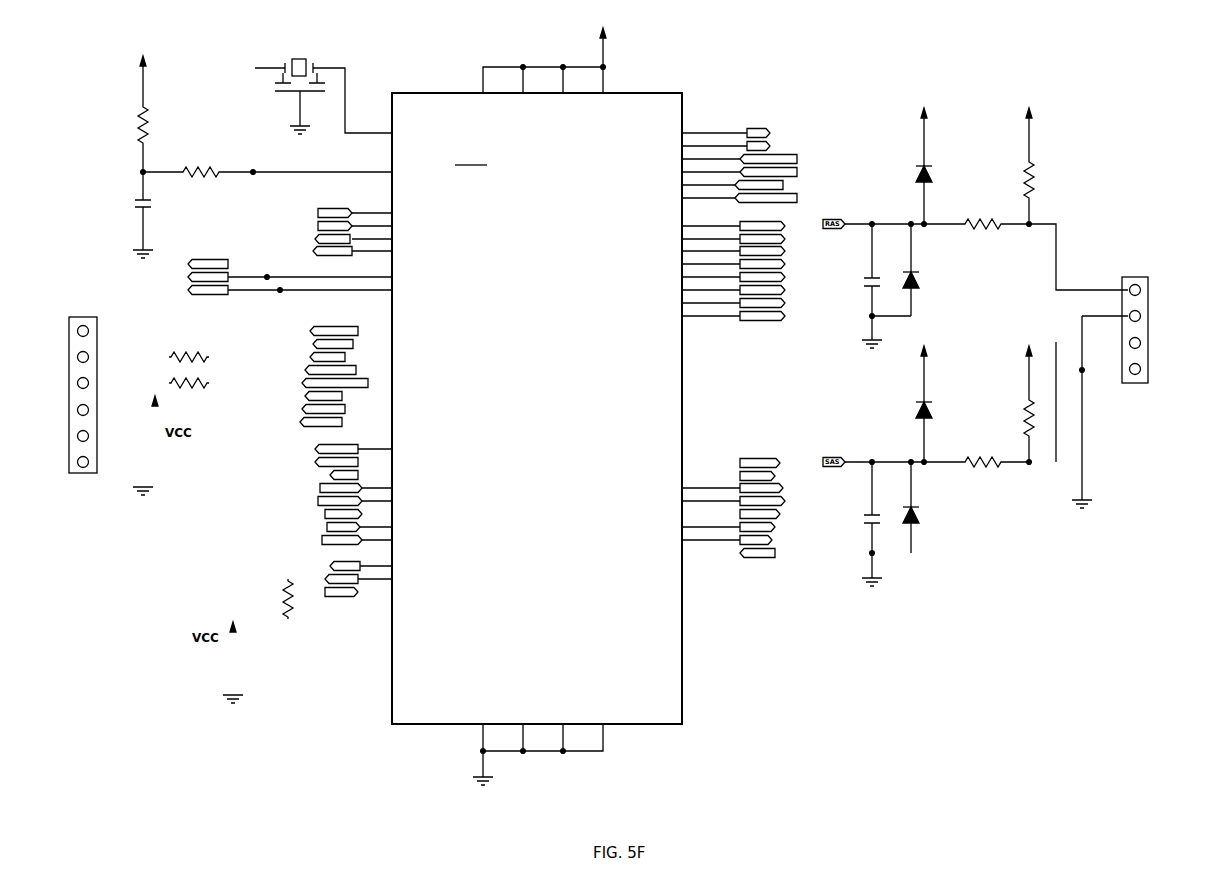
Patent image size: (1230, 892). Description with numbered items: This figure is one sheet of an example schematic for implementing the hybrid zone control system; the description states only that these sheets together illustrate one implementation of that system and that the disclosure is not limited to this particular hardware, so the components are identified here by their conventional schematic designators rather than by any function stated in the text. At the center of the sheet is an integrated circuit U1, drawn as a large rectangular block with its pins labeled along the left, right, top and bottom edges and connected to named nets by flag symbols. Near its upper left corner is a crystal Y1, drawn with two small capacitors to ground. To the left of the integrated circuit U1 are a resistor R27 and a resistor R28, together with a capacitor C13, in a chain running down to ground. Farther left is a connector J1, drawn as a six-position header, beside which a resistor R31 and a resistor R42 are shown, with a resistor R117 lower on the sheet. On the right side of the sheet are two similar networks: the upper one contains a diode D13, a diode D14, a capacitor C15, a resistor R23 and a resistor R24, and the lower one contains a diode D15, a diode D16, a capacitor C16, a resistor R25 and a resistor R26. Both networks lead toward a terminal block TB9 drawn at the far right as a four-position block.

The microcontroller 18F6722 U1 is at (492, 406).
The crystal 8.00MHz Y1 is at (323, 79).
The resistor 2.2K R27 is at (166, 114).
The resistor 10K R28 is at (266, 175).
The capacitor .1uF C13 is at (125, 215).
The connector J1 is at (91, 384).
The resistor 100 R31 is at (186, 351).
The resistor 100 R42 is at (186, 377).
The resistor DNE R117 is at (262, 599).
The diode SD103AW D13 is at (882, 158).
The diode SD103AW D14 is at (945, 270).
The diode SD103AW D15 is at (882, 396).
The diode SD103AW D16 is at (945, 507).
The capacitor .1uF C15 is at (865, 286).
The capacitor .1uF C16 is at (851, 524).
The resistor 7.5K 1% R23 is at (994, 158).
The resistor 4.7K R24 is at (980, 246).
The resistor 7.5K 1% R25 is at (994, 396).
The resistor 4.7K R26 is at (980, 485).
The terminal block TB9 is at (1151, 317).